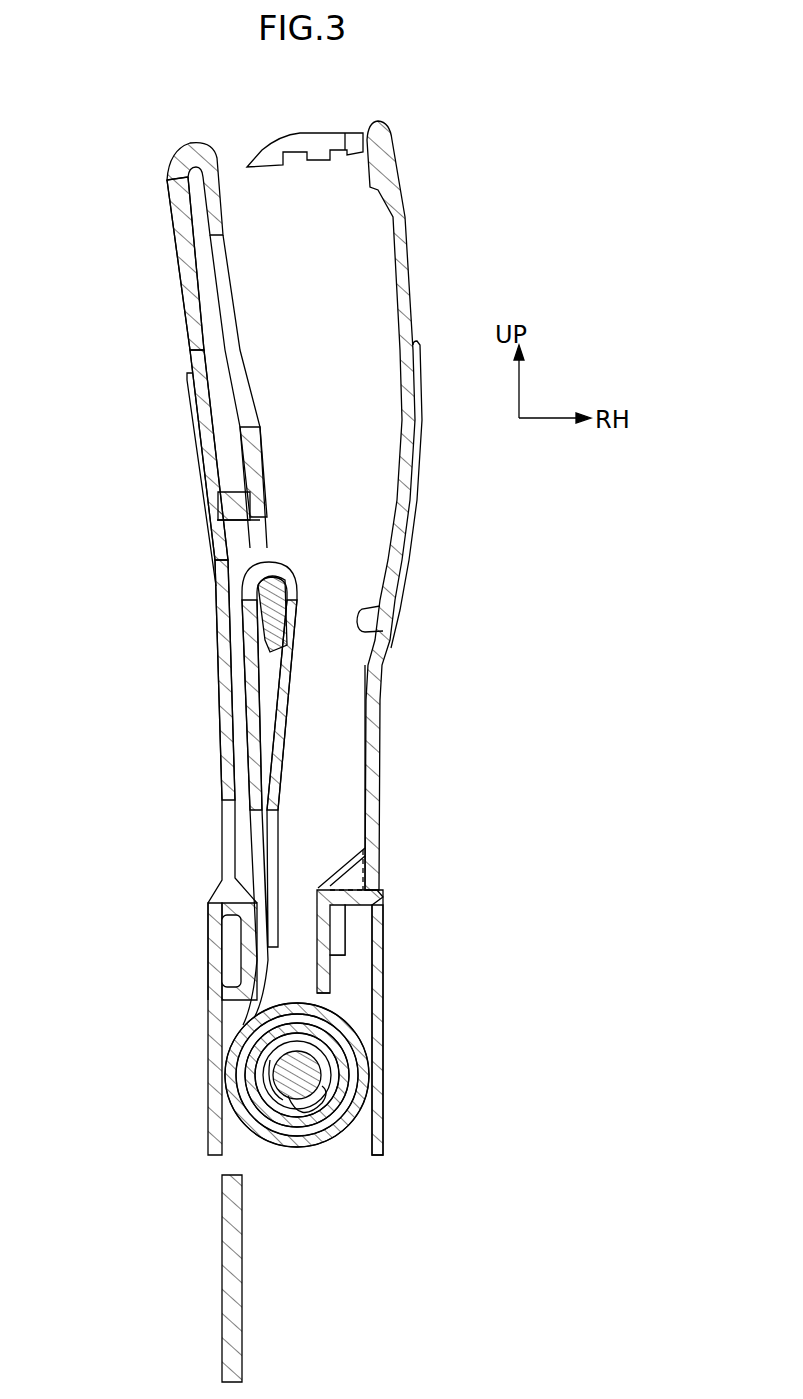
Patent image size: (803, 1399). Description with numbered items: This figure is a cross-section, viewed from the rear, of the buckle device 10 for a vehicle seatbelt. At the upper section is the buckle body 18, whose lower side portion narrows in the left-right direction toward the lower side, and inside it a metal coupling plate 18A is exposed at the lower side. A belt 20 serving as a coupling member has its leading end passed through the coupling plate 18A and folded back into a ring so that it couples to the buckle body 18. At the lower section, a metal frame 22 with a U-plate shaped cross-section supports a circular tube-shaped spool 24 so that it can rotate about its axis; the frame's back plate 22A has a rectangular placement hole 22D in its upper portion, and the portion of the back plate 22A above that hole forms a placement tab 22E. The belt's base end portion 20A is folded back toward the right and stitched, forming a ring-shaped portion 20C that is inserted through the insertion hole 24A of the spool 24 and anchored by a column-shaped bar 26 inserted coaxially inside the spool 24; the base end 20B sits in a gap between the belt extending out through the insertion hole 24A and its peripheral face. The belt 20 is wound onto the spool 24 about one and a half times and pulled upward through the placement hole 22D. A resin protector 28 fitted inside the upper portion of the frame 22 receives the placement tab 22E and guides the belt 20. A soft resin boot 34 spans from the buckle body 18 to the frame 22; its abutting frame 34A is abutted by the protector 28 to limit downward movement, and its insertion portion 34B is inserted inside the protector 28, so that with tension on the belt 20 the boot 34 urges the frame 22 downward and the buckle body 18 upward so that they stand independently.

The buckle device 10 is at (473, 182).
The buckle body 18 is at (407, 270).
The coupling plate 18A is at (262, 455).
The belt 20 is at (282, 742).
The base end portion 20A is at (340, 1028).
The base end 20B is at (313, 1112).
The ring-shaped portion 20C is at (353, 1113).
The frame 22 is at (185, 1029).
The back plate 22A is at (222, 1287).
The rectangular placement hole 22D is at (222, 1000).
The placement tab 22E is at (232, 942).
The spool 24 is at (248, 1080).
The insertion hole 24A is at (322, 1110).
The bar 26 is at (322, 1072).
The protector 28 is at (345, 927).
The boot 34 is at (382, 739).
The abutting frame 34A is at (355, 912).
The insertion portion 34B is at (330, 973).